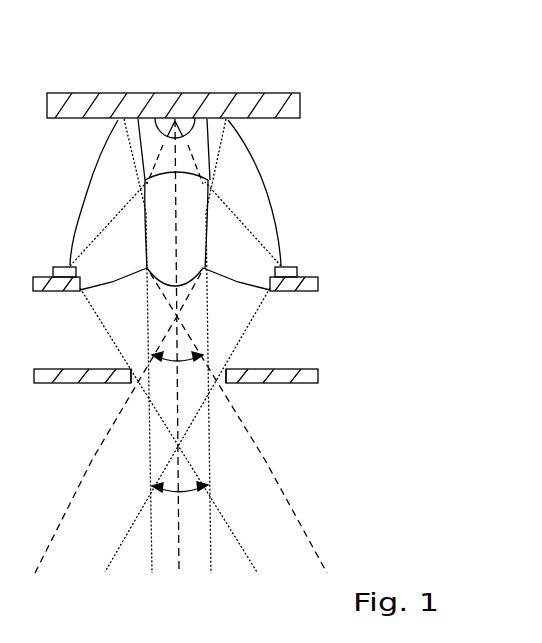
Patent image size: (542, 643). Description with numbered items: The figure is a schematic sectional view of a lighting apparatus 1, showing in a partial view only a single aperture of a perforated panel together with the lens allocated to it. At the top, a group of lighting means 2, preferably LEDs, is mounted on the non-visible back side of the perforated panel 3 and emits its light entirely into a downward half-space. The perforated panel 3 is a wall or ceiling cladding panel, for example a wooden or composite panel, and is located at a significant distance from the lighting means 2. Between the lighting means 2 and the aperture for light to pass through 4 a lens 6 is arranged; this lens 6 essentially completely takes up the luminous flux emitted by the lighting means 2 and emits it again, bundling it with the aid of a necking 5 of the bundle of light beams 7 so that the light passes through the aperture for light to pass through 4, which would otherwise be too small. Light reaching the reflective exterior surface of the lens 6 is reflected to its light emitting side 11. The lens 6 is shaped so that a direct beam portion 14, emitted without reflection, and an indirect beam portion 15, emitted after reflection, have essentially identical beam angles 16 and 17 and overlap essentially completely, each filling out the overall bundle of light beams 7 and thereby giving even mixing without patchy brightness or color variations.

The lighting apparatus 1 is at (432, 172).
The lighting means 2 is at (177, 118).
The perforated panel 3 is at (302, 377).
The aperture for light to pass through 4 is at (230, 372).
The necking 5 is at (222, 385).
The lens 6 is at (257, 210).
The bundle of light beams 7 is at (90, 464).
The light emitting side 11 is at (110, 292).
The direct beam portion 14 is at (192, 302).
The indirect beam portion 15 is at (258, 312).
The beam angle 16 is at (178, 362).
The beam angle 17 is at (183, 492).